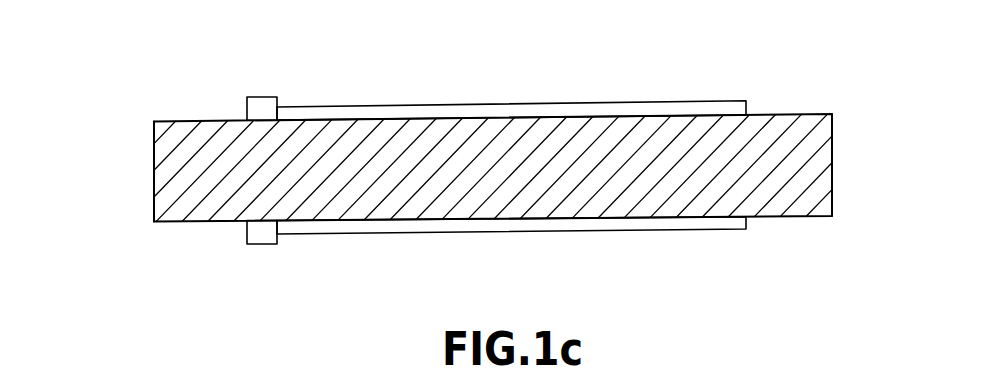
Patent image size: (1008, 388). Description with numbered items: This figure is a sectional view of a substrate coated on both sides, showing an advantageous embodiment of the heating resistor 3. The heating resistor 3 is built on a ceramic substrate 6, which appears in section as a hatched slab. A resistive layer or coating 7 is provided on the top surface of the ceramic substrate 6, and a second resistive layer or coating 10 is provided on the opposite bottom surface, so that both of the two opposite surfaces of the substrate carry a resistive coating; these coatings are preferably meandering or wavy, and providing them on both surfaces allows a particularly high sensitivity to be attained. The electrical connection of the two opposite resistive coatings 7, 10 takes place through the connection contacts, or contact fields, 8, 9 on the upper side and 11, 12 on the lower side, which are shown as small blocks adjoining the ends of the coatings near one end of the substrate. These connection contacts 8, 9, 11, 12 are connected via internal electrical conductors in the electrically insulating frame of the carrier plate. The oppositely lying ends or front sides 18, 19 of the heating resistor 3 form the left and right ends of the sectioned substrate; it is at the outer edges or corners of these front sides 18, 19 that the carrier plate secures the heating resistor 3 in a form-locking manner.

The heating resistor 3 is at (499, 162).
The ceramic substrate 6 is at (462, 210).
The resistive layer or coating 7 is at (645, 110).
The connection contact 8 is at (229, 89).
The connection contact 9 is at (258, 101).
The resistive layer or coating 10 is at (605, 232).
The connection contact 11 is at (297, 251).
The connection contact 12 is at (255, 246).
The end or front side 18 is at (150, 160).
The end or front side 19 is at (842, 152).